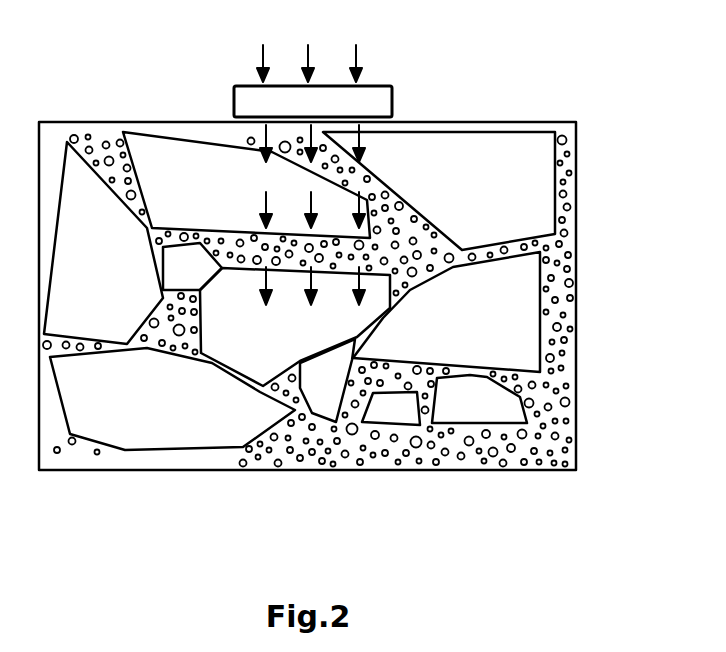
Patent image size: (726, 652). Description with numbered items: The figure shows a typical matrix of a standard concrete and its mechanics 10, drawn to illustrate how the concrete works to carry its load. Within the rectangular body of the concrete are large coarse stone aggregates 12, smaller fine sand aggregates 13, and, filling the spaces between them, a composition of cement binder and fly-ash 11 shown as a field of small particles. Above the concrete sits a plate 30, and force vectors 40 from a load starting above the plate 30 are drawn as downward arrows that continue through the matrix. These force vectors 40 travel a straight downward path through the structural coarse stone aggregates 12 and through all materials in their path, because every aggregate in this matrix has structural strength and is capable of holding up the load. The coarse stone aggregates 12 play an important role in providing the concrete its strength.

The matrix of a standard concrete and its mechanics 10 is at (343, 480).
The composition of cement binder and fly-ash 11 is at (266, 460).
The coarse stone aggregates 12 is at (163, 420).
The fine sand aggregates 13 is at (435, 433).
The plate 30 is at (380, 100).
The force vectors 40 is at (360, 53).